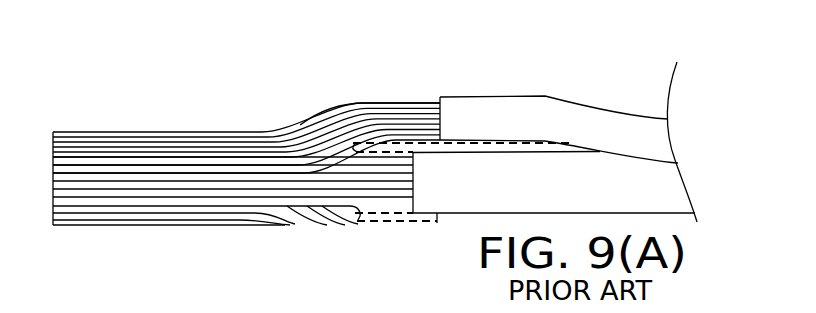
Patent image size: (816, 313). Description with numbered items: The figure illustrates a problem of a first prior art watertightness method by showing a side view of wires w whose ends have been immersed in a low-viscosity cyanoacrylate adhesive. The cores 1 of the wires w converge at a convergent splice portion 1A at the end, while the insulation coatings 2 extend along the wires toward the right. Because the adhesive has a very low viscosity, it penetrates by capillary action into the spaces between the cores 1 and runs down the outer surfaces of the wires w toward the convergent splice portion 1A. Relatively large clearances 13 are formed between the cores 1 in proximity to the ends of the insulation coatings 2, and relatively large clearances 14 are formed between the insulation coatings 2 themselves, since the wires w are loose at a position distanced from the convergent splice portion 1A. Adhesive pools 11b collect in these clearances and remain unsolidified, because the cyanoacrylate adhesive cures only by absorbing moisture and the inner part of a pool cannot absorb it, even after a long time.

The convergent splice portion 1A is at (93, 146).
The cores 1 is at (373, 101).
The adhesive pools 11b is at (381, 143).
The clearances 13 is at (404, 144).
The clearances 14 is at (498, 142).
The insulation coatings 2 is at (573, 107).
The wires W is at (629, 114).